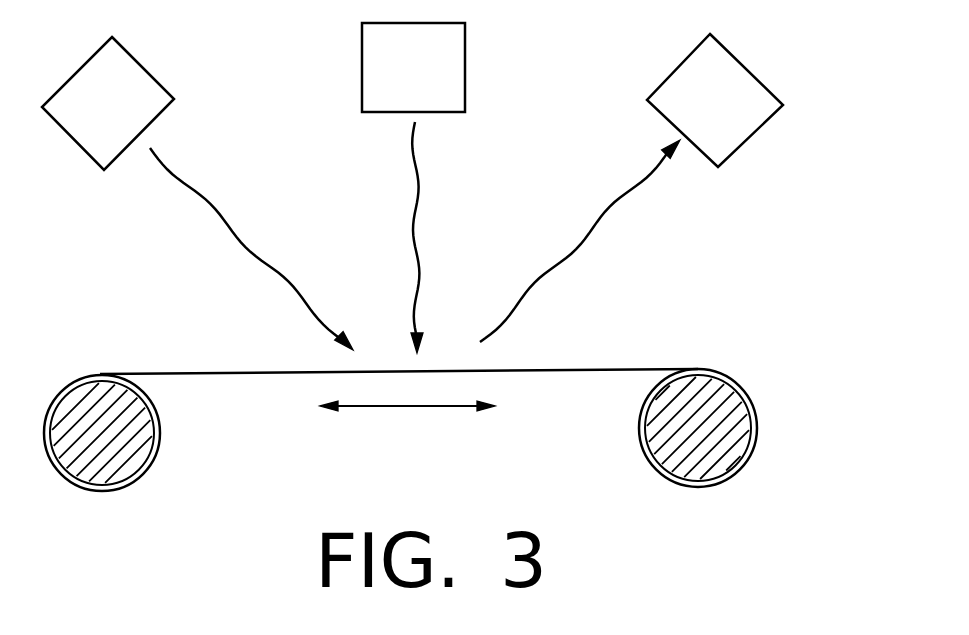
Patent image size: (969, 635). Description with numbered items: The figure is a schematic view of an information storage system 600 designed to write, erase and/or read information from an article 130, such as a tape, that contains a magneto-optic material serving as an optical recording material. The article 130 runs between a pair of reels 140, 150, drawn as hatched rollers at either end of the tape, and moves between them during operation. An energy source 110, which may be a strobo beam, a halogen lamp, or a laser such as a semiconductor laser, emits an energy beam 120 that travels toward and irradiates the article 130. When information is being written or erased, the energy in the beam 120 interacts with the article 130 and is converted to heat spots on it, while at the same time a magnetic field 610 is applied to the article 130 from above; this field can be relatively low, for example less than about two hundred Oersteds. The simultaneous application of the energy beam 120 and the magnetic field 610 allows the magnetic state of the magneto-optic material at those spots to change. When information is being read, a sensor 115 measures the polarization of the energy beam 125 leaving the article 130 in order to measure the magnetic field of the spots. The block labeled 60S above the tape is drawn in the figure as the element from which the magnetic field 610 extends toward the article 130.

The energy source 110 is at (82, 118).
The sensor 115 is at (695, 118).
The sensor 60S is at (384, 79).
The information storage system 600 is at (762, 240).
The energy beam 120 is at (238, 237).
The energy beam 125 is at (560, 258).
The magnetic field 610 is at (415, 183).
The article 130 is at (598, 370).
The reel 140 is at (140, 437).
The reel 150 is at (653, 428).